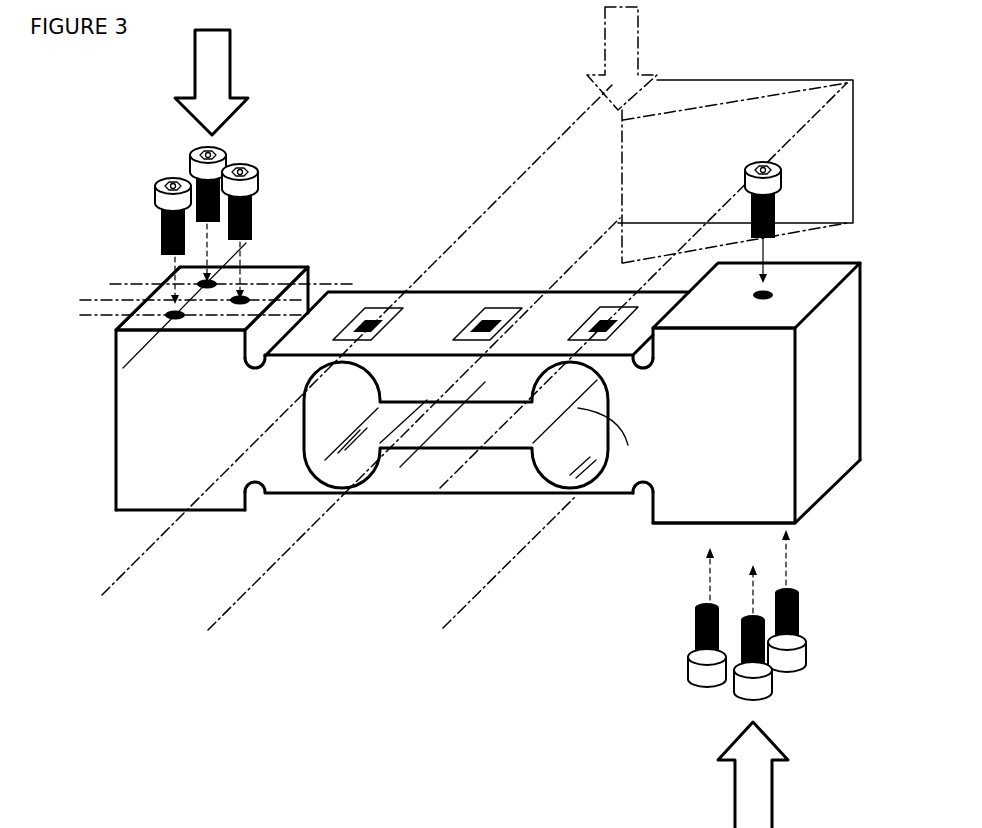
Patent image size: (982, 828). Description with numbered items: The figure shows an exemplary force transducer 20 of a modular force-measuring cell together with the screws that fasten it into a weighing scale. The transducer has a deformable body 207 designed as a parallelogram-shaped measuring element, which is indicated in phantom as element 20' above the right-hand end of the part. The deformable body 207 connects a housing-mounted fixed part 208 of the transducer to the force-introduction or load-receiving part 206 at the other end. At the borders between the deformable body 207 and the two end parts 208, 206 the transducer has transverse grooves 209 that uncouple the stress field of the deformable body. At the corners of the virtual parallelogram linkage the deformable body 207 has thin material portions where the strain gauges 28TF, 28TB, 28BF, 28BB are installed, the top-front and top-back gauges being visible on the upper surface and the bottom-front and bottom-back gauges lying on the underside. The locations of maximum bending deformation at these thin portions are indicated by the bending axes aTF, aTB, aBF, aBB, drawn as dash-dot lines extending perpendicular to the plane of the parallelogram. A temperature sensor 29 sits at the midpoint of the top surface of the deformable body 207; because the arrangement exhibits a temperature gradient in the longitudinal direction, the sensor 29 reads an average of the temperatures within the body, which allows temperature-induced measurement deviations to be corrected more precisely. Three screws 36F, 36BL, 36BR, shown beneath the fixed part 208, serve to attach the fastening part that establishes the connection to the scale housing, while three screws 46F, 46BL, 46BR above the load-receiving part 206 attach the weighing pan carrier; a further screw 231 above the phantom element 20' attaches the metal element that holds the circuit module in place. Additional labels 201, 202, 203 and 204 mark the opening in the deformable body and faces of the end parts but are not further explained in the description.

The force transducer 20 is at (462, 376).
The parallelogram-shaped measuring element 20' is at (720, 135).
The oblong through-hole 201 is at (600, 438).
The top mounting surface of right end block 202 is at (767, 280).
The bottom mounting surface of right end block 203 is at (798, 524).
The top mounting surface of left end block 204 is at (162, 283).
The load-receiving part 206 is at (120, 513).
The deformable body 207 is at (413, 322).
The housing-mounted fixed part 208 is at (737, 453).
The transverse grooves 209 is at (255, 357).
The screw 231 is at (755, 160).
The strain gauge 28TF is at (363, 310).
The strain gauge 28TB is at (602, 307).
The strain gauge 28BF is at (368, 497).
The strain gauge 28BB is at (605, 502).
The temperature sensor 29 is at (482, 308).
The screw 36F is at (695, 685).
The screw 36BL is at (775, 697).
The screw 36BR is at (808, 668).
The screw 46F is at (257, 167).
The screw 46BL is at (158, 178).
The screw 46BR is at (188, 155).
The bending axis aTF is at (342, 358).
The bending axis aBF is at (396, 441).
The bending axis aTB is at (629, 310).
The bending axis aBB is at (494, 578).